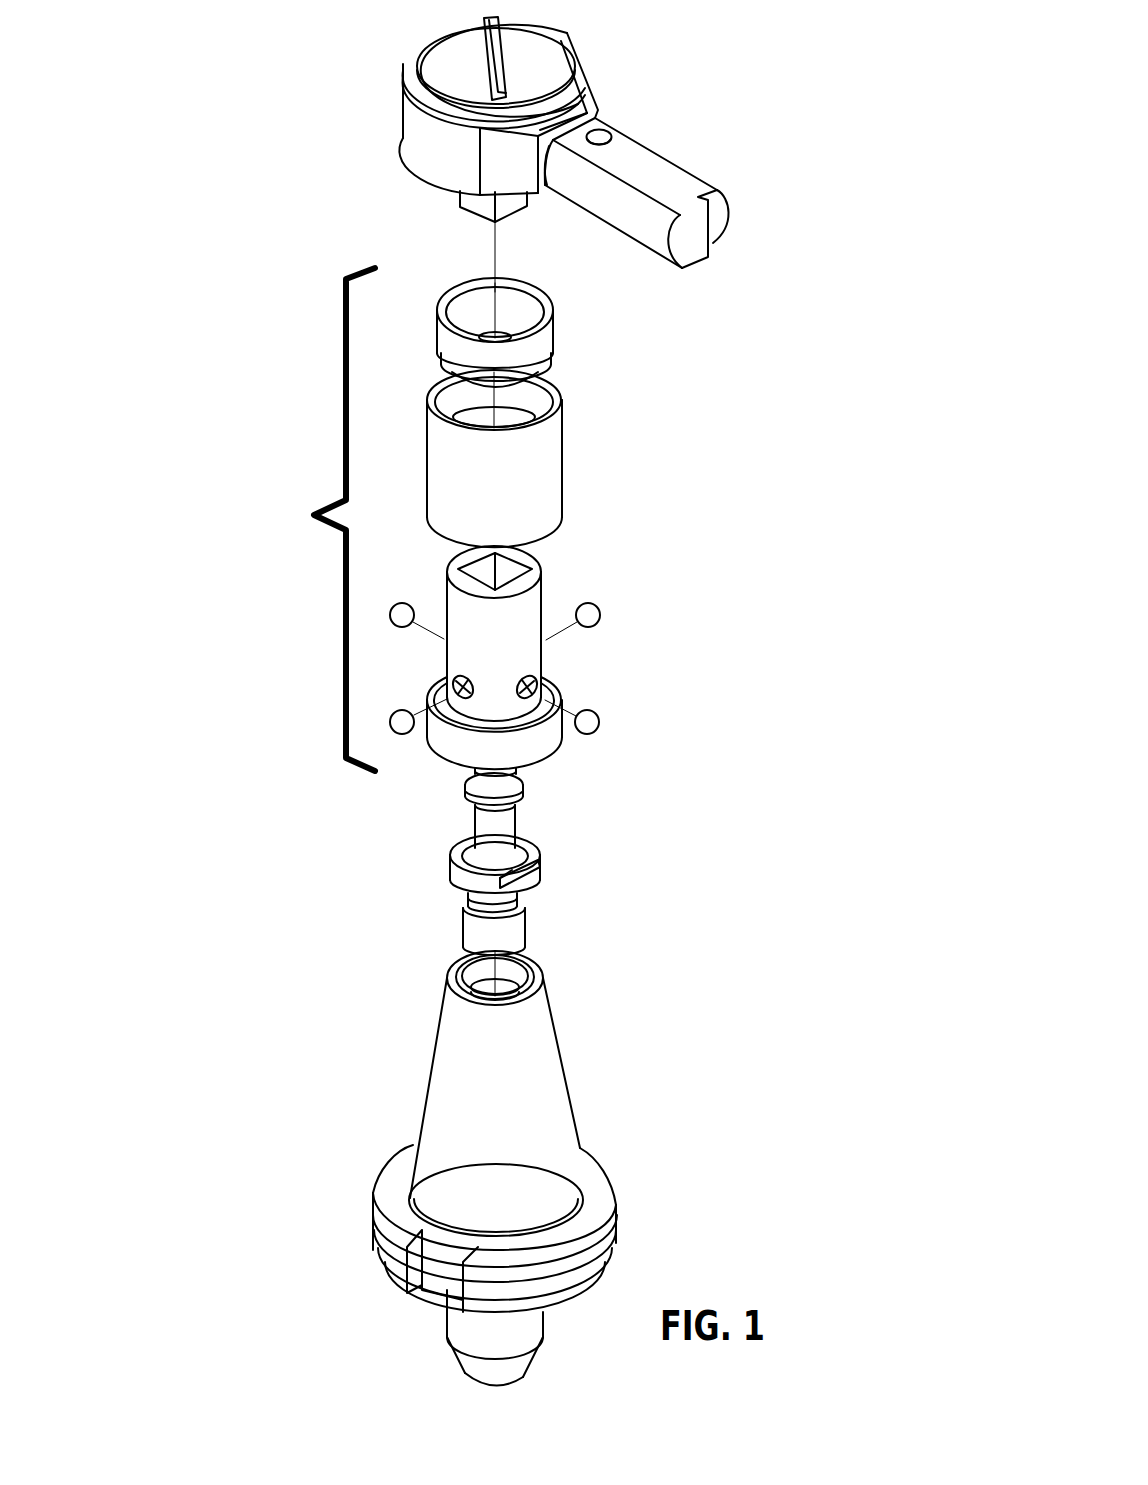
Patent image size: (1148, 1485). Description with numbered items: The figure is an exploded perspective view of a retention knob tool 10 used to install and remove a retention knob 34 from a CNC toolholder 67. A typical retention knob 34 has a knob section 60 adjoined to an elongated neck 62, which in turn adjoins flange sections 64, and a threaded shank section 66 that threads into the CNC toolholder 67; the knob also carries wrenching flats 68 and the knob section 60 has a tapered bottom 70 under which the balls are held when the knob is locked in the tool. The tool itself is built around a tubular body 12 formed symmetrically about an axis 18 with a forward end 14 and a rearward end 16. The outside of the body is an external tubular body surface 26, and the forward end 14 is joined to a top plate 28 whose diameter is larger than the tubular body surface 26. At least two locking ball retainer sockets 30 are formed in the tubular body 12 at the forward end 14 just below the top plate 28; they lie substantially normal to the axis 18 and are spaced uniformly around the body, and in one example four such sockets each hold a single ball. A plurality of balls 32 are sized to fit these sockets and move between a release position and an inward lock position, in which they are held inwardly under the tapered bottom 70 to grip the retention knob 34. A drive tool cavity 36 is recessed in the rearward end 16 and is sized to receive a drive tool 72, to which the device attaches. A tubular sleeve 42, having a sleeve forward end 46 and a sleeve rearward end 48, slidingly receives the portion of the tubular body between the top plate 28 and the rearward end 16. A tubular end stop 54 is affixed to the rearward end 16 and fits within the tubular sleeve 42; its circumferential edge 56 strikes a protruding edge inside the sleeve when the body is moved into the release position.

The retention knob tool 10 is at (306, 519).
The tubular body 12 is at (542, 592).
The forward end 14 is at (542, 665).
The rearward end 16 is at (532, 562).
The axis 18 is at (493, 260).
The external tubular body surface 26 is at (513, 658).
The top plate 28 is at (555, 733).
The locking ball retainer sockets 30 is at (530, 688).
The balls 32 is at (403, 605).
The retention knob 34 is at (460, 880).
The drive tool cavity 36 is at (482, 577).
The tubular sleeve 42 is at (562, 464).
The sleeve forward end 46 is at (562, 517).
The sleeve rearward end 48 is at (562, 420).
The tubular end stop 54 is at (553, 328).
The circumferential edge 56 is at (508, 415).
The knob section 60 is at (522, 790).
The elongated neck 62 is at (493, 827).
The flange sections 64 is at (543, 880).
The threaded shank section 66 is at (527, 925).
The CNC toolholder 67 is at (540, 1057).
The wrenching flats 68 is at (533, 867).
The tapered bottom 70 is at (523, 803).
The drive tool 72 is at (460, 207).